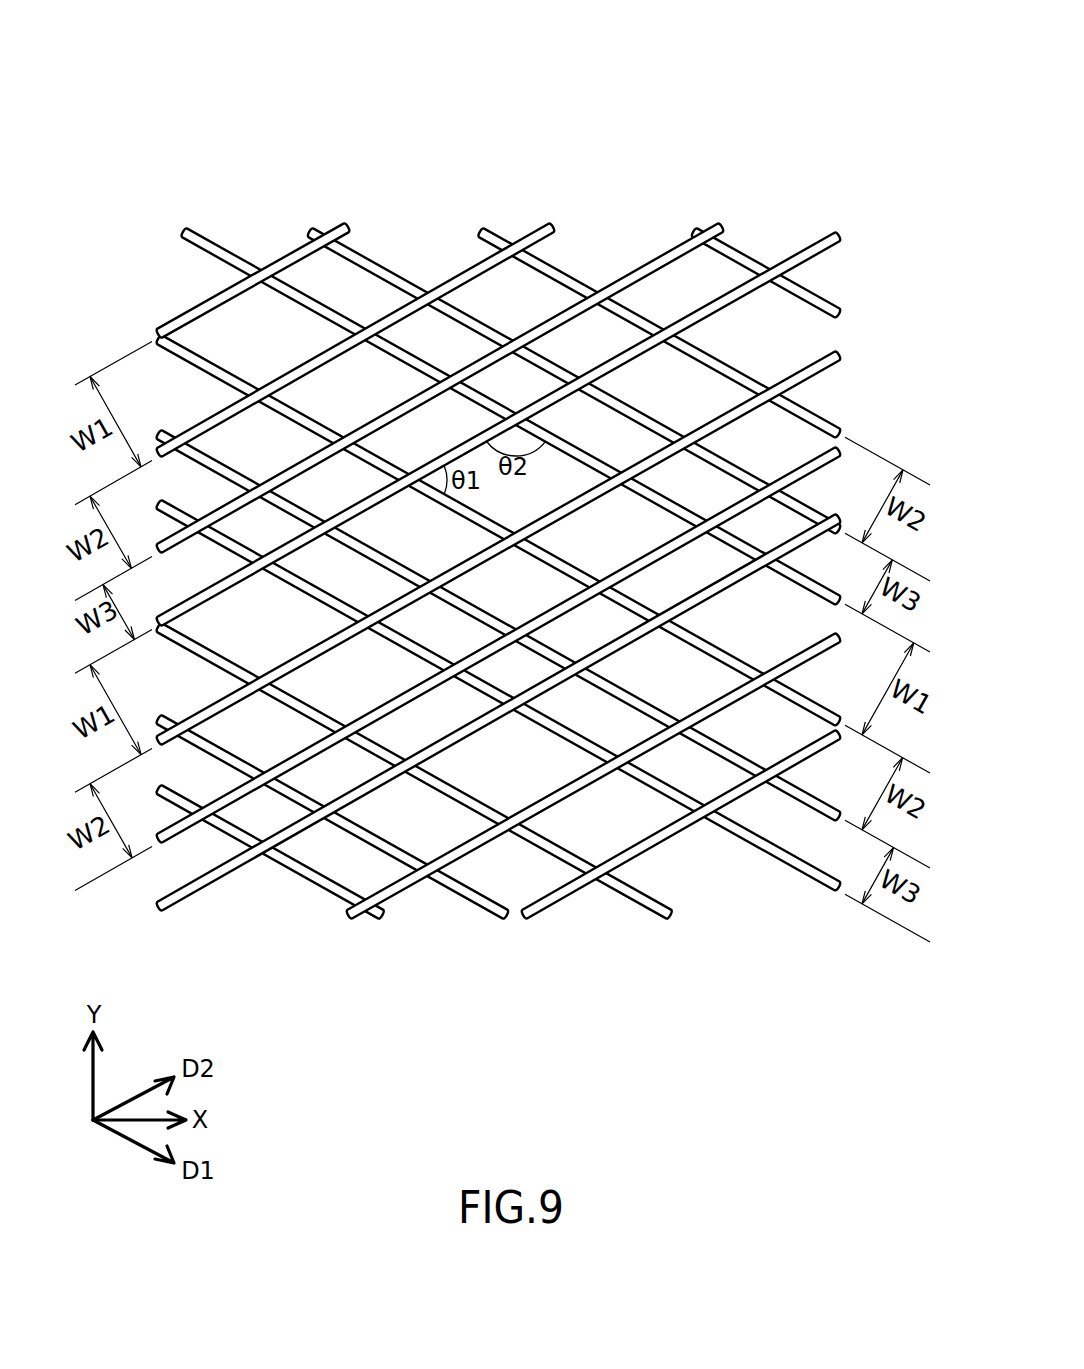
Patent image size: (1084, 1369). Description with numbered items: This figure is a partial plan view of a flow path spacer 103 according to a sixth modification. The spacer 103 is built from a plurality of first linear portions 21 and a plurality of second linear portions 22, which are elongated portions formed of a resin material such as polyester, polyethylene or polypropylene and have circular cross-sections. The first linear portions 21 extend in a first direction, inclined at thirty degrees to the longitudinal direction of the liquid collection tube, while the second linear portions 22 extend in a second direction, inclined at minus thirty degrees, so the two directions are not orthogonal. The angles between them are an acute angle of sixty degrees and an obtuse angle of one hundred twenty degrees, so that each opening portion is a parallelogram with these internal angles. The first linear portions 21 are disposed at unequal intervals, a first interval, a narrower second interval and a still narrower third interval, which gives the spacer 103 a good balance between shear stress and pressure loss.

The flow path spacer 103 is at (498, 511).
The first linear portion 21 is at (338, 893).
The second linear portion 22 is at (296, 256).